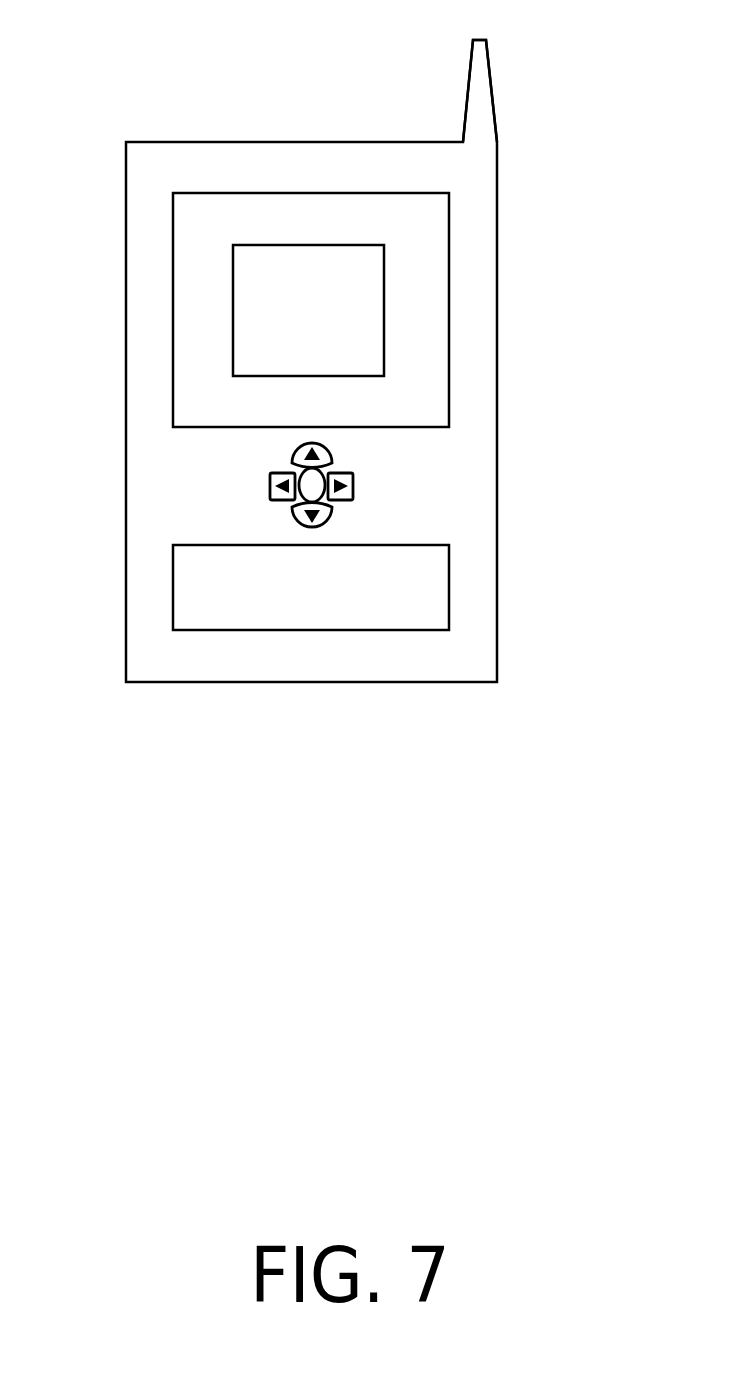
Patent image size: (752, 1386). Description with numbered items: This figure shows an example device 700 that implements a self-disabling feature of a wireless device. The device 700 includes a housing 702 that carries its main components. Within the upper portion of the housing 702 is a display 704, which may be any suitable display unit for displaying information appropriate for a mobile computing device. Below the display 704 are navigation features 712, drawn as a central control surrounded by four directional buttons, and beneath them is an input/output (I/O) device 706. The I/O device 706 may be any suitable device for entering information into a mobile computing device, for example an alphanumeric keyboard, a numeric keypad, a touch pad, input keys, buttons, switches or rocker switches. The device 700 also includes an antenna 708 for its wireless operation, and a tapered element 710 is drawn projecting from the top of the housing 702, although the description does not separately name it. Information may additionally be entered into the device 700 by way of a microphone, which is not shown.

The device 700 is at (144, 60).
The housing 702 is at (500, 414).
The display 704 is at (454, 219).
The input/output (I/O) device 706 is at (457, 581).
The antenna 708 is at (392, 328).
The antenna 710 is at (465, 84).
The navigation features 712 is at (359, 487).